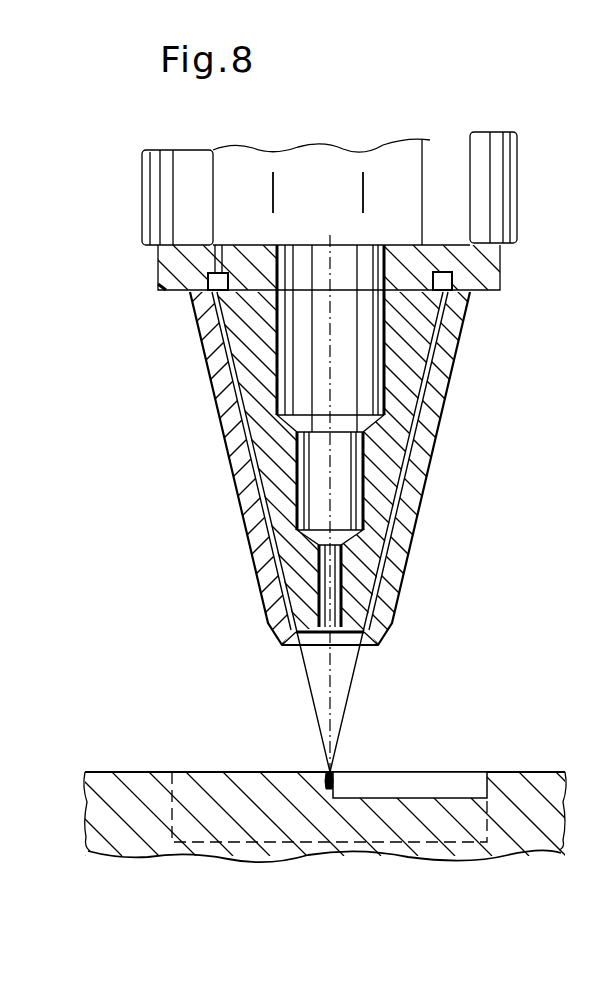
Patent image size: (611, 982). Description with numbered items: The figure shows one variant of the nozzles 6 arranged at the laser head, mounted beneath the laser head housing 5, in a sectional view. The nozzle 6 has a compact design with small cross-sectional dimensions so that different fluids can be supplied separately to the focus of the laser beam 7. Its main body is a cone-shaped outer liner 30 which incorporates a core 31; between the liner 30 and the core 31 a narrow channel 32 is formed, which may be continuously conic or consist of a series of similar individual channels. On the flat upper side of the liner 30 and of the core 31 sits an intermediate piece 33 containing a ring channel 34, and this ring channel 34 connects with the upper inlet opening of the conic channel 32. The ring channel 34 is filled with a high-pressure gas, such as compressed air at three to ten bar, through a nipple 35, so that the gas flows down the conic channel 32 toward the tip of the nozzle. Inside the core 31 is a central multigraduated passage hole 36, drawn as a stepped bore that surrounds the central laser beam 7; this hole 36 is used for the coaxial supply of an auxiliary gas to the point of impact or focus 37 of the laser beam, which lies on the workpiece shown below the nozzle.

The laser processing head housing 5 is at (455, 165).
The nozzle 6 is at (186, 315).
The laser beam 7 is at (327, 358).
The cone-shaped outer liner 30 is at (398, 525).
The core 31 is at (378, 450).
The narrow channel 32 is at (430, 347).
The intermediate piece 33 is at (475, 268).
The ring channel 34 is at (490, 290).
The nipple 35 is at (205, 262).
The central multigraduated passage hole 36 is at (355, 253).
The focus 37 is at (333, 771).